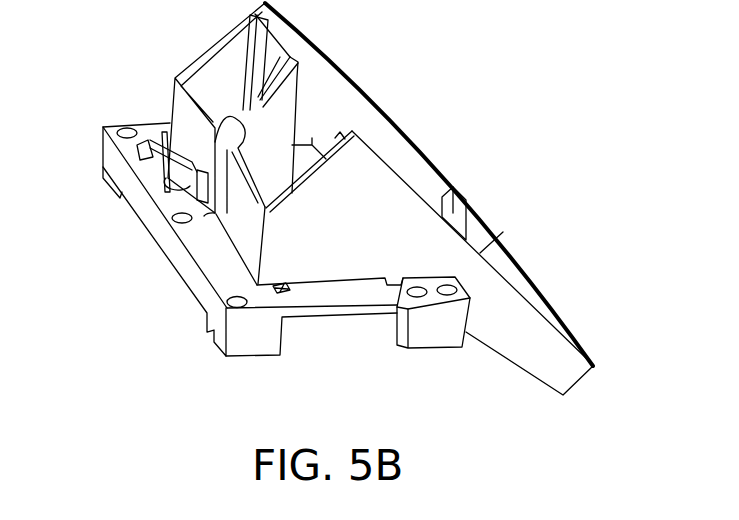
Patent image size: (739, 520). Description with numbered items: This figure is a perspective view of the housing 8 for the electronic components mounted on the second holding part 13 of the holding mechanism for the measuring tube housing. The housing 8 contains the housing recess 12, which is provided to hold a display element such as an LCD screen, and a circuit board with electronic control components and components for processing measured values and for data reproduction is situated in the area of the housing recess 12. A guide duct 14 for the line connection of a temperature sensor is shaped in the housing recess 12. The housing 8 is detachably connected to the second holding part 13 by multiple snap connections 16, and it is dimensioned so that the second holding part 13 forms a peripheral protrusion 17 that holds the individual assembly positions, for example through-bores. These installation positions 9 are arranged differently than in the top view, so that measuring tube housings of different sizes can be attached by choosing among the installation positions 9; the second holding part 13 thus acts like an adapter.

The housing 8 is at (372, 53).
The installation positions 9 is at (418, 292).
The housing recess 12 is at (405, 144).
The second holding part 13 is at (130, 240).
The guide duct 14 is at (263, 100).
The snap connections 16 is at (277, 290).
The peripheral protrusion 17 is at (217, 263).